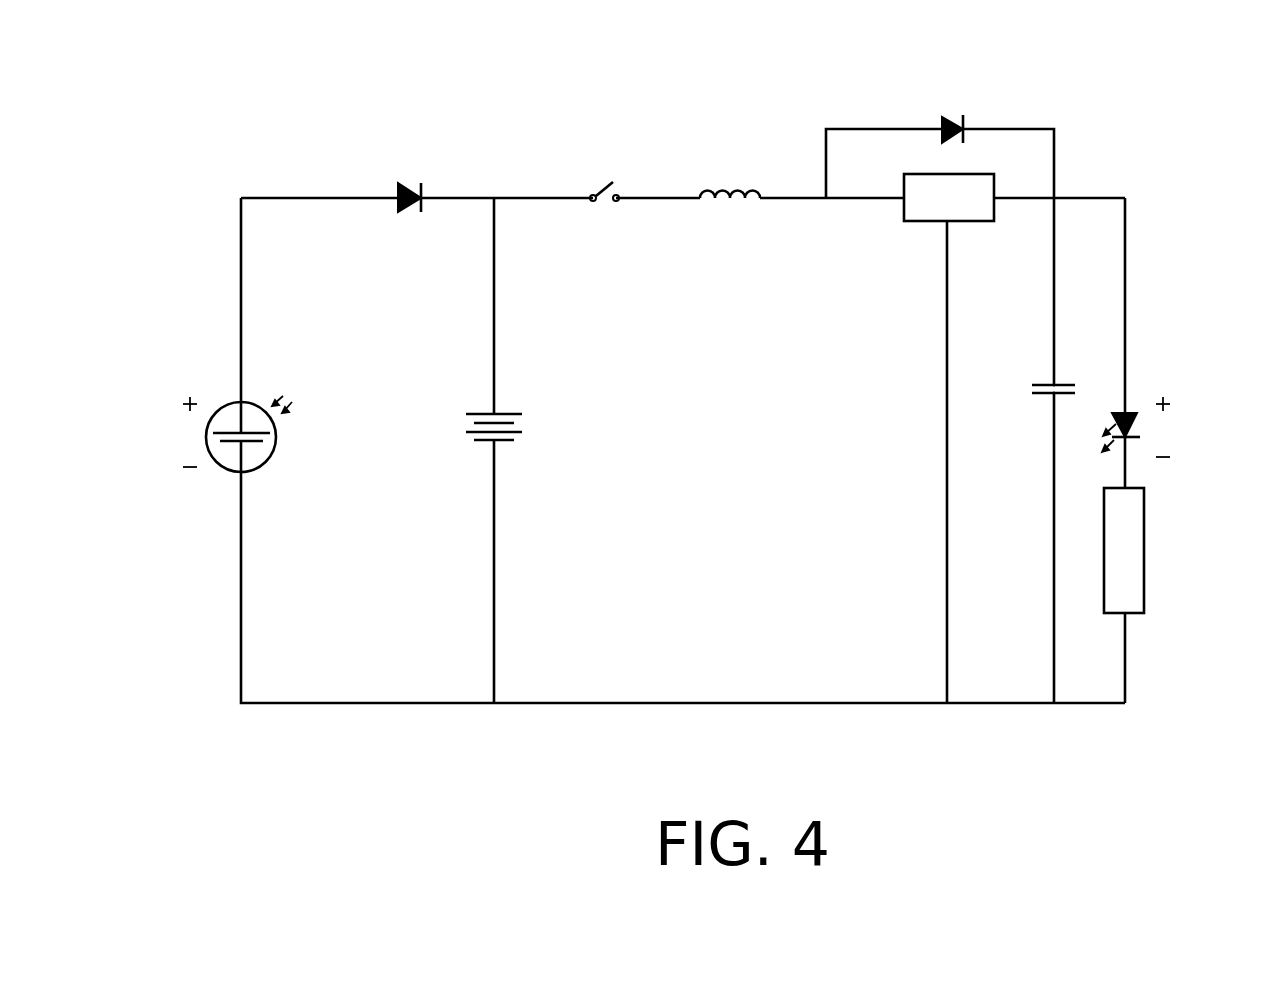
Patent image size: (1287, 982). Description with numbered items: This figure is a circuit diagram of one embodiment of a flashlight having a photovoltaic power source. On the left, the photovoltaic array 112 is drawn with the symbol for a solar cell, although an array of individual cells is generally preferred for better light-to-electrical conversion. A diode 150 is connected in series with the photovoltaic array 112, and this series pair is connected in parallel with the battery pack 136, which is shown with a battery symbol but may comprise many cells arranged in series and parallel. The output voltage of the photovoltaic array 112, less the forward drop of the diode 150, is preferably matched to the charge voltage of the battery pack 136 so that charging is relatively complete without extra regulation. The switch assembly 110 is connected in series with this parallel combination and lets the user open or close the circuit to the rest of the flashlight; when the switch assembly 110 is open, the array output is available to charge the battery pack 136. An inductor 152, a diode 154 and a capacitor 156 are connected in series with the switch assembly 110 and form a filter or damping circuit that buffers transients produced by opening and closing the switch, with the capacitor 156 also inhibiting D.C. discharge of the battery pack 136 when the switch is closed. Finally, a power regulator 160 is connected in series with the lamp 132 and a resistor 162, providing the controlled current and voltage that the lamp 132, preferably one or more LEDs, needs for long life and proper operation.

The photovoltaic array 112 is at (206, 440).
The diode 150 is at (411, 212).
The switch assembly 110 is at (602, 183).
The inductor 152 is at (740, 188).
The diode 154 is at (956, 115).
The power regulator 160 is at (926, 222).
The capacitor 156 is at (1067, 380).
The lamp 132 is at (1180, 434).
The resistor 162 is at (1145, 565).
The battery pack 136 is at (510, 410).